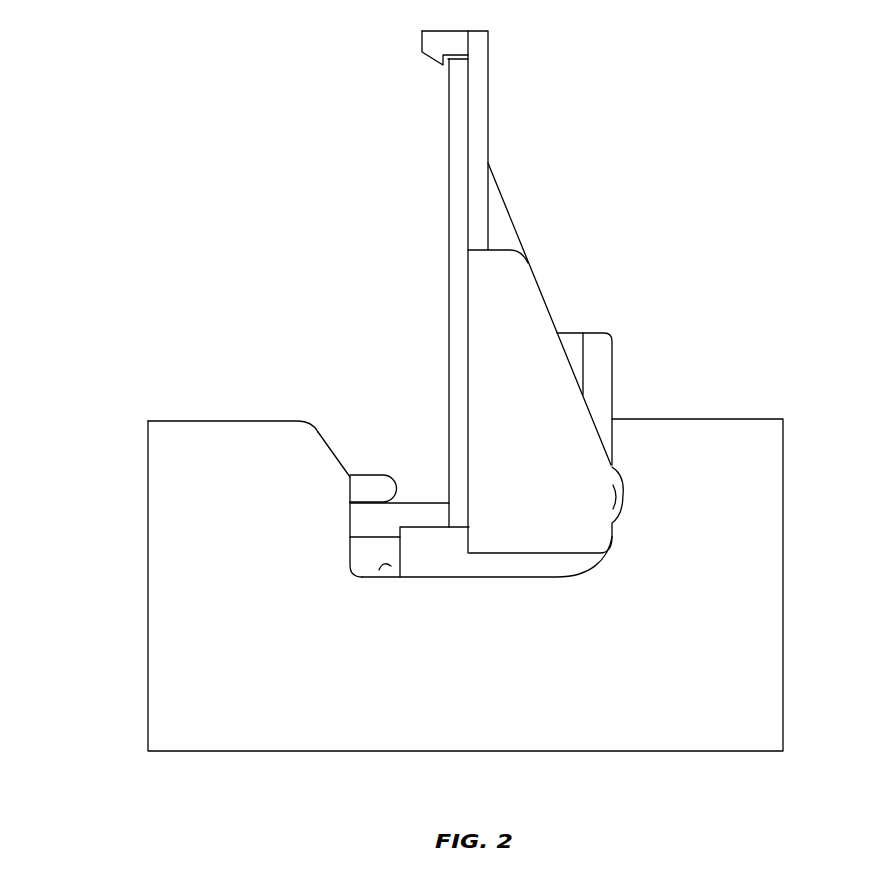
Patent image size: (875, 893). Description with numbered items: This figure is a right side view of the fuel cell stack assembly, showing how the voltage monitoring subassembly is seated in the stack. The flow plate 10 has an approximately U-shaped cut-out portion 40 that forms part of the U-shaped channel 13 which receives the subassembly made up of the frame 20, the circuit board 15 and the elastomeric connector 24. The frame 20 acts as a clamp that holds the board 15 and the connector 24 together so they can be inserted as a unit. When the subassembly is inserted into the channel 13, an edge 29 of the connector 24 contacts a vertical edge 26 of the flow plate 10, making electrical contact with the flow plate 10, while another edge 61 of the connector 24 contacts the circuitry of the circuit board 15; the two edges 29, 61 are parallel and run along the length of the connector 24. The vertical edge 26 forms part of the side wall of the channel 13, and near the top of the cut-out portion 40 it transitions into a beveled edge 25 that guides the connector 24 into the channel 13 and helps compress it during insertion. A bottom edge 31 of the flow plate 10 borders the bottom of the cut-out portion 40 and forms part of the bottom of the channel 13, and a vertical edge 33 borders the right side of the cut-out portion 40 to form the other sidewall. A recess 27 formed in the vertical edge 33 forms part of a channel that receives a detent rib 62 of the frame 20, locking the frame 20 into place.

The flow plate 10 is at (717, 438).
The U-shaped channel 13 is at (380, 567).
The circuit board 15 is at (533, 275).
The frame 20 is at (449, 113).
The elastomeric connector 24 is at (422, 510).
The beveled edge 25 is at (346, 472).
The vertical edge 26 is at (349, 477).
The recess 27 is at (615, 477).
The edge of the connector 29 is at (352, 524).
The bottom edge 31 is at (485, 577).
The vertical edge 33 is at (613, 467).
The U-shaped cut-out portion 40 is at (440, 578).
The edge of the connector 61 is at (449, 505).
The detent rib 62 is at (623, 495).